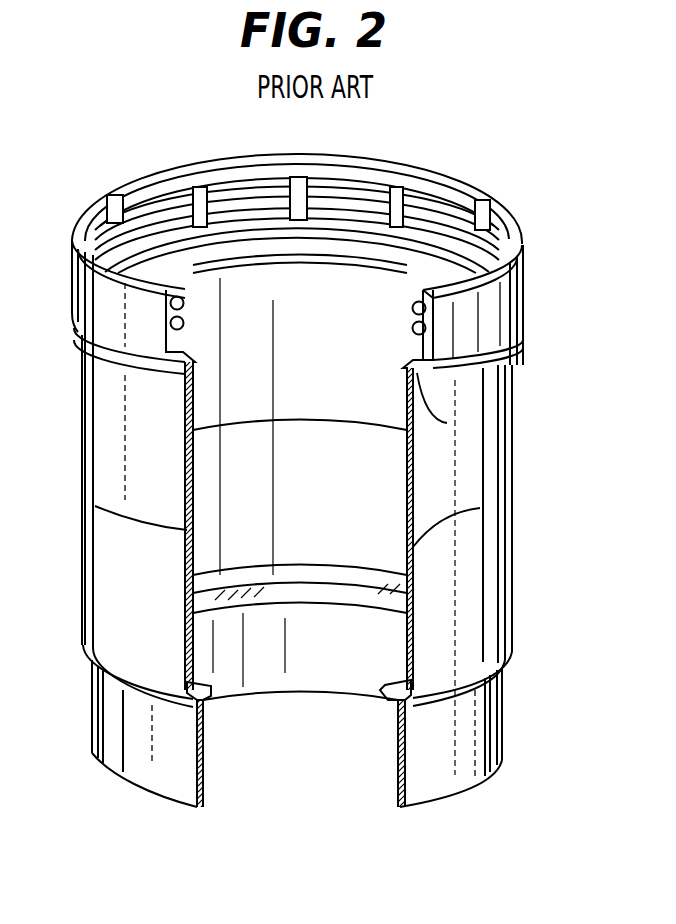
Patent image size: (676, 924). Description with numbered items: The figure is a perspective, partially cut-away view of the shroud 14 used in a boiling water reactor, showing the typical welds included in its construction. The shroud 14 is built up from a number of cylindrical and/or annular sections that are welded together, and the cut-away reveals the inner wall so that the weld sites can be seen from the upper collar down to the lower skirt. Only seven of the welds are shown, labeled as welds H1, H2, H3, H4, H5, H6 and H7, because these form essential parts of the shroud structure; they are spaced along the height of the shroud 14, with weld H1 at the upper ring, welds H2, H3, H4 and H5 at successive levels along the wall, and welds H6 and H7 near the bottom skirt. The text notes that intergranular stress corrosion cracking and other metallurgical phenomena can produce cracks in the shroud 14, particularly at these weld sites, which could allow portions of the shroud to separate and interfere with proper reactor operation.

The shroud 14 is at (107, 581).
The weld H1 is at (518, 284).
The weld H2 is at (480, 362).
The weld H3 is at (447, 423).
The weld H4 is at (413, 543).
The weld H5 is at (413, 690).
The weld H6 is at (403, 700).
The weld H7 is at (400, 807).